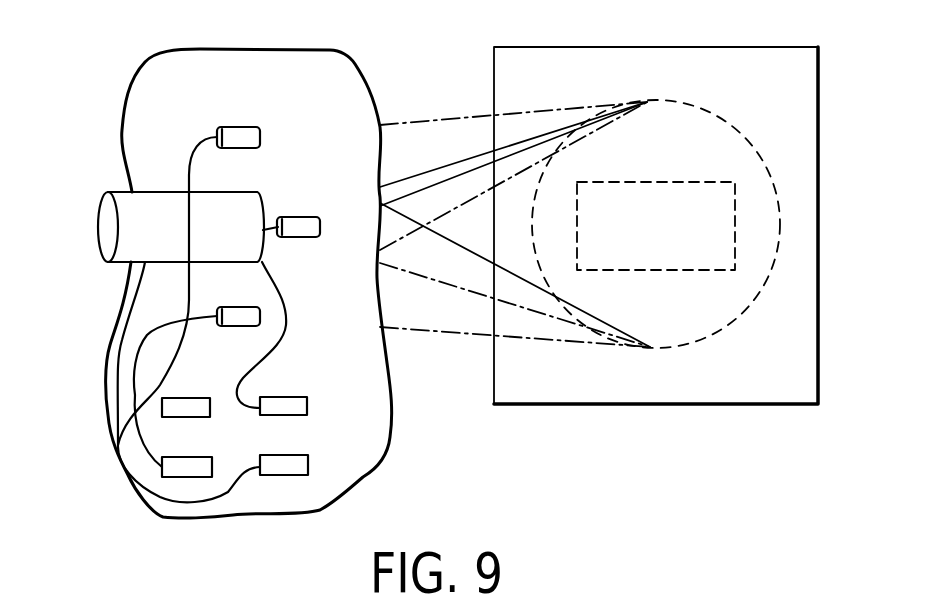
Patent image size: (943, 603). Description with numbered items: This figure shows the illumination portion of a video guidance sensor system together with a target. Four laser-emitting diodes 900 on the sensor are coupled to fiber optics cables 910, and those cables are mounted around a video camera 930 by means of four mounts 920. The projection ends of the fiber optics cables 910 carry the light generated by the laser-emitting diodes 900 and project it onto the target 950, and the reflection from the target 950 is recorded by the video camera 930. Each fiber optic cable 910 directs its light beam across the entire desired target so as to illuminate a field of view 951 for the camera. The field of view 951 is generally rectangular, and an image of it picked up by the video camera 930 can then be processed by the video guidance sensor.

The laser-emitting diodes 900 is at (277, 415).
The fiber optics cables 910 is at (162, 408).
The mounts 920 is at (298, 228).
The video camera 930 is at (110, 215).
The target 950 is at (750, 58).
The field of view 951 is at (670, 182).